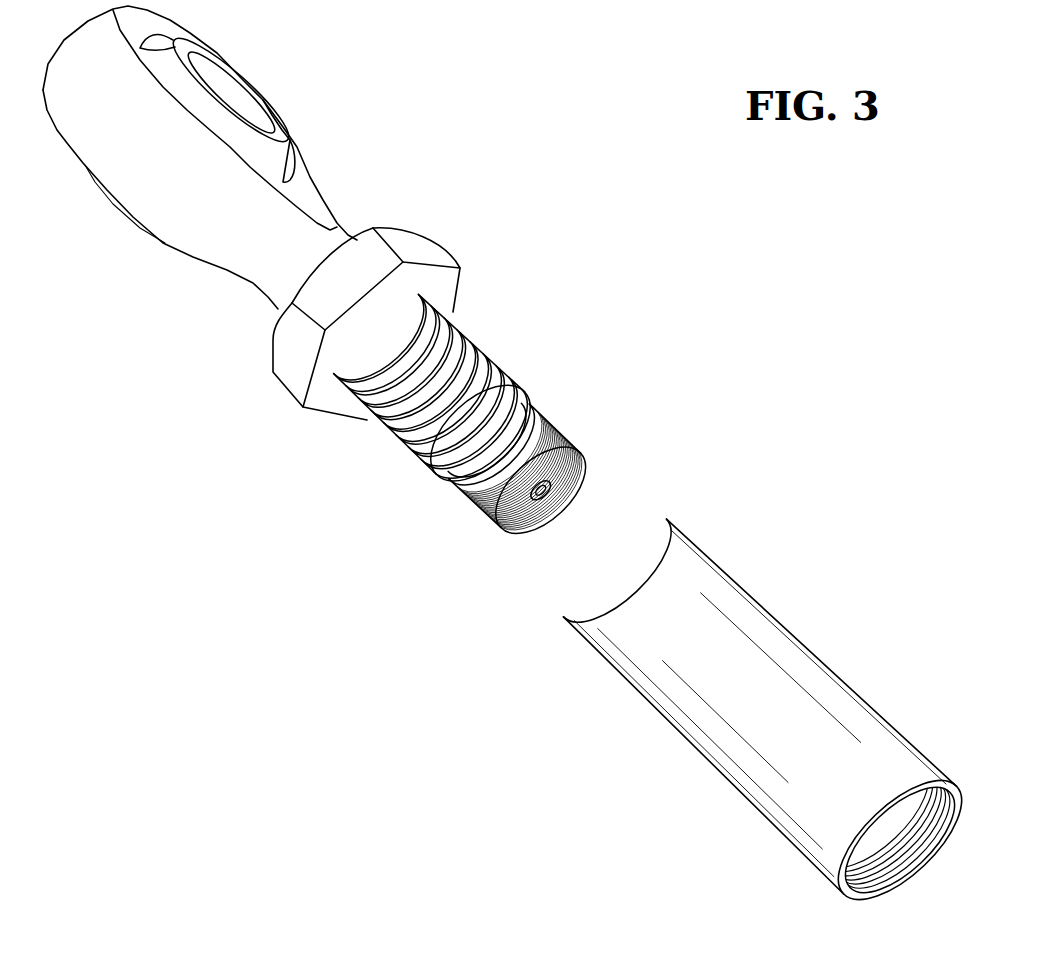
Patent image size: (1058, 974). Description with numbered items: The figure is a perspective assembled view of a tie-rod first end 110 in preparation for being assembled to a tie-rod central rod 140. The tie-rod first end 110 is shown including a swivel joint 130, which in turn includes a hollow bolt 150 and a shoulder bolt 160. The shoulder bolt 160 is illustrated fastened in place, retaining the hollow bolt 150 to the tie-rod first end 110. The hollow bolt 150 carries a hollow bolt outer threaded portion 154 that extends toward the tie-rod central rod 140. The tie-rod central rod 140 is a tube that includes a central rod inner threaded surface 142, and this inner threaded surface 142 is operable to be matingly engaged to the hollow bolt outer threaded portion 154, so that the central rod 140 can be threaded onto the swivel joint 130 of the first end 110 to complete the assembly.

The tie-rod first end 110 is at (91, 122).
The swivel joint 130 is at (481, 359).
The tie-rod central rod 140 is at (772, 652).
The central rod inner threaded surface 142 is at (630, 500).
The hollow bolt 150 is at (290, 372).
The hollow bolt outer threaded portion 154 is at (415, 418).
The shoulder bolt 160 is at (513, 522).